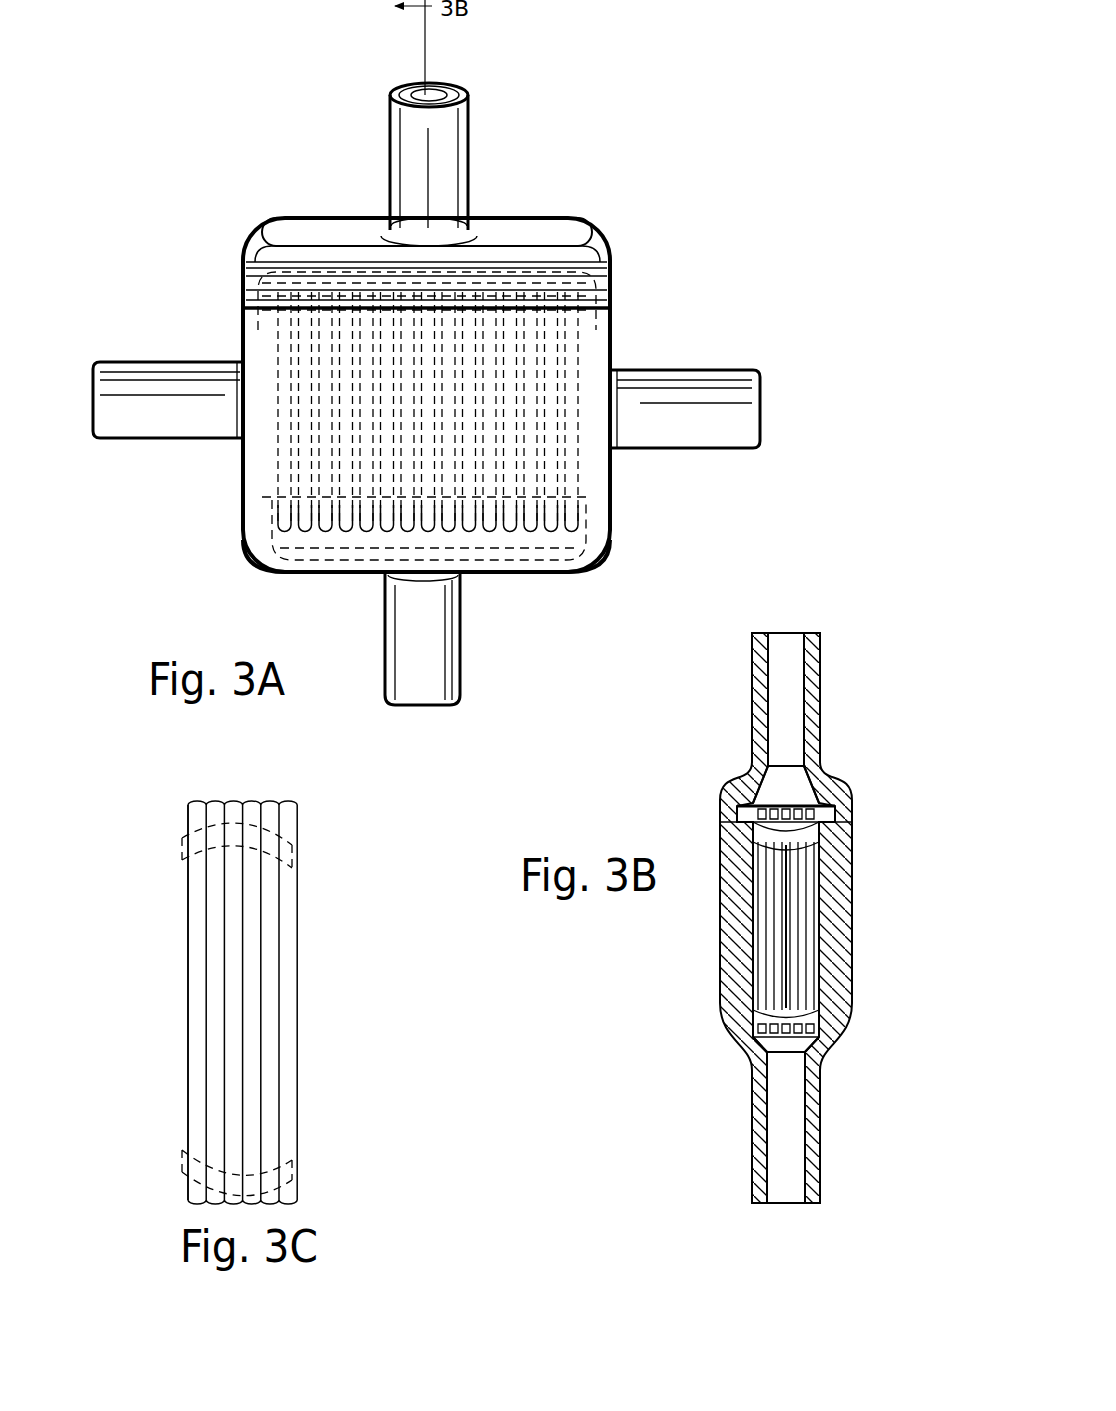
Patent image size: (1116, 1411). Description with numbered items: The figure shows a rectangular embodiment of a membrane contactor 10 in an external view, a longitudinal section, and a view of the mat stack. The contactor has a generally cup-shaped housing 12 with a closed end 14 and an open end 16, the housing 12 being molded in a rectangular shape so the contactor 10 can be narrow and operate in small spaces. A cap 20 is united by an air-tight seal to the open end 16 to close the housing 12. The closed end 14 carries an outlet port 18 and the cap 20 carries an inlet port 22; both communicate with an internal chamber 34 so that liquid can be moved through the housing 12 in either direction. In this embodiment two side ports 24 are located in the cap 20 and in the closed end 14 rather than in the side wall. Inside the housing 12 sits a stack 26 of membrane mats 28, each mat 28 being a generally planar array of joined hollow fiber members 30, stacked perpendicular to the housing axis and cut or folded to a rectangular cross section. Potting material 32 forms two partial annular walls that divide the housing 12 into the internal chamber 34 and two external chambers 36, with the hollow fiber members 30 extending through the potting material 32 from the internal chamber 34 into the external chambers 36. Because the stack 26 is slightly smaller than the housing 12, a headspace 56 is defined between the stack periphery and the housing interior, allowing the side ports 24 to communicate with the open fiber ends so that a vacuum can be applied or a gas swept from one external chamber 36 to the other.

In FIG. 3A, the membrane contactor 10 is at (128, 185).
In FIG. 3B, the membrane contactor 10 is at (848, 685).
In FIG. 3B, the housing 12 is at (853, 1032).
In FIG. 3A, the closed end 14 is at (485, 575).
In FIG. 3A, the open end 16 is at (520, 232).
In FIG. 3A, the outlet port 18 is at (760, 410).
In FIG. 3A, the cap 20 is at (595, 300).
In FIG. 3A, the inlet port 22 is at (93, 398).
In FIG. 3A, the side port 24 is at (420, 85).
In FIG. 3B, the side port 24 is at (787, 648).
In FIG. 3A, the stack 26 is at (548, 575).
In FIG. 3B, the stack 26 is at (845, 838).
In FIG. 3A, the membrane mat 28 is at (560, 541).
In FIG. 3C, the membrane mat 28 is at (368, 985).
In FIG. 3B, the hollow fiber member 30 is at (800, 915).
In FIG. 3C, the hollow fiber member 30 is at (188, 1003).
In FIG. 3A, the potting material 32 is at (240, 305).
In FIG. 3B, the potting material 32 is at (748, 812).
In FIG. 3C, the potting material 32 is at (182, 845).
In FIG. 3A, the internal chamber 34 is at (245, 385).
In FIG. 3B, the internal chamber 34 is at (773, 932).
In FIG. 3A, the external chamber 36 is at (243, 318).
In FIG. 3B, the external chamber 36 is at (770, 805).
In FIG. 3B, the headspace 56 is at (785, 800).